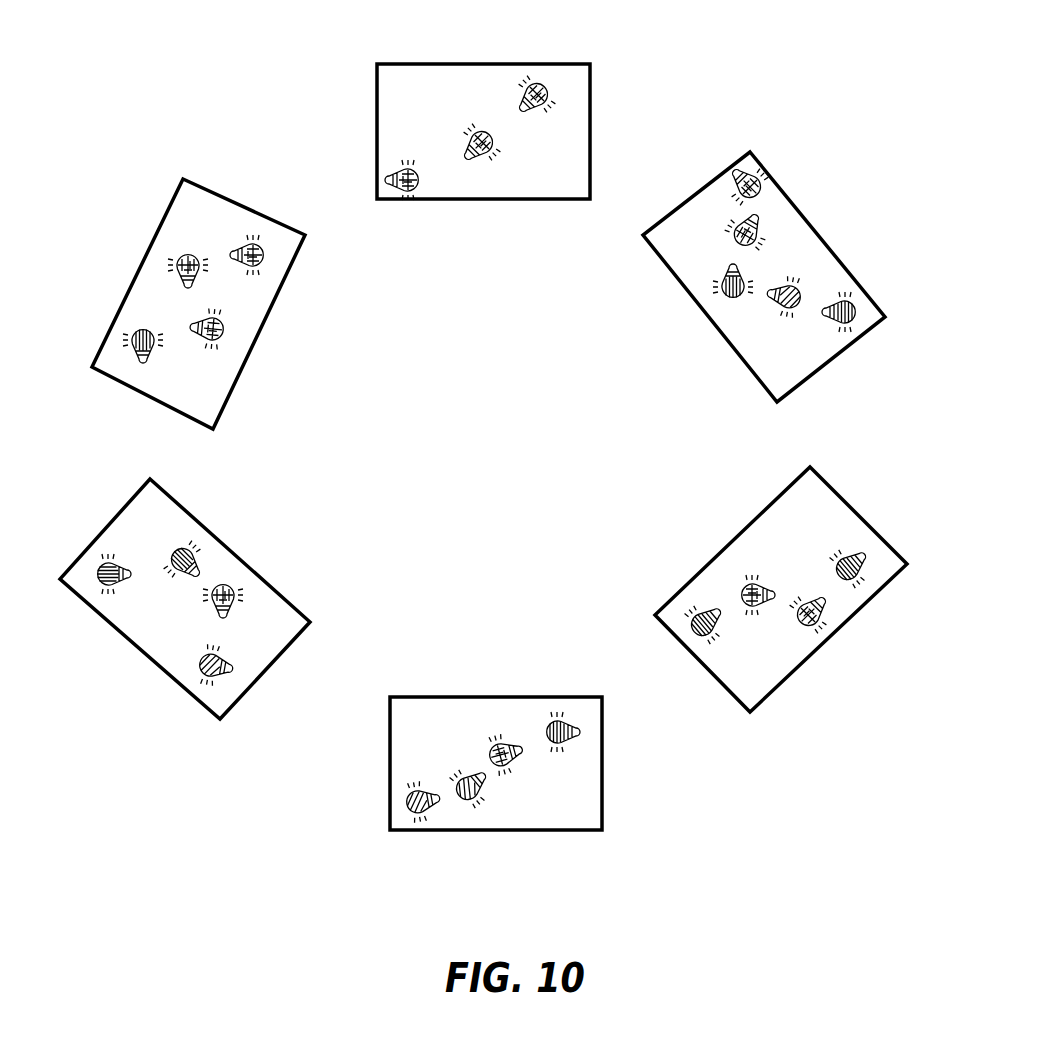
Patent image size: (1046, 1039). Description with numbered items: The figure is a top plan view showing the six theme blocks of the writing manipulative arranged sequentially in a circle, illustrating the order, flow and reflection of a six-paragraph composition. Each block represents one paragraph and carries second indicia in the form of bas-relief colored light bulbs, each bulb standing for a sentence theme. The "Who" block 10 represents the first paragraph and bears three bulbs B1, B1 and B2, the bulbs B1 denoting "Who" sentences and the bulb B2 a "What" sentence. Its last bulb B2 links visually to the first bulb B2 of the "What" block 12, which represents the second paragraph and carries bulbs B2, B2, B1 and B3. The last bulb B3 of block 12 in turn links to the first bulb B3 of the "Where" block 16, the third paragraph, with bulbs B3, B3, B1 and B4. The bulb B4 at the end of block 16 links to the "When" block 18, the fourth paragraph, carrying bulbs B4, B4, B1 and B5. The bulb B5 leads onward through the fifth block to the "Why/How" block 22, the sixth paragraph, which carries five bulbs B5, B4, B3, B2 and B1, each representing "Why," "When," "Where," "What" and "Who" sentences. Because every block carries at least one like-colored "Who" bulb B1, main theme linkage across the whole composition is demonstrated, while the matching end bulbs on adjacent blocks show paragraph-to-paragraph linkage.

The manipulative 10 is at (412, 199).
The theme block 12 is at (273, 308).
The block 16 is at (170, 488).
The theme block 18 is at (400, 695).
The theme block 22 is at (742, 354).
The colored light bulb B1 is at (475, 118).
The colored light bulb B2 is at (390, 172).
The colored light bulb B3 is at (130, 343).
The colored light bulb B4 is at (818, 284).
The colored light bulb B5 is at (868, 300).